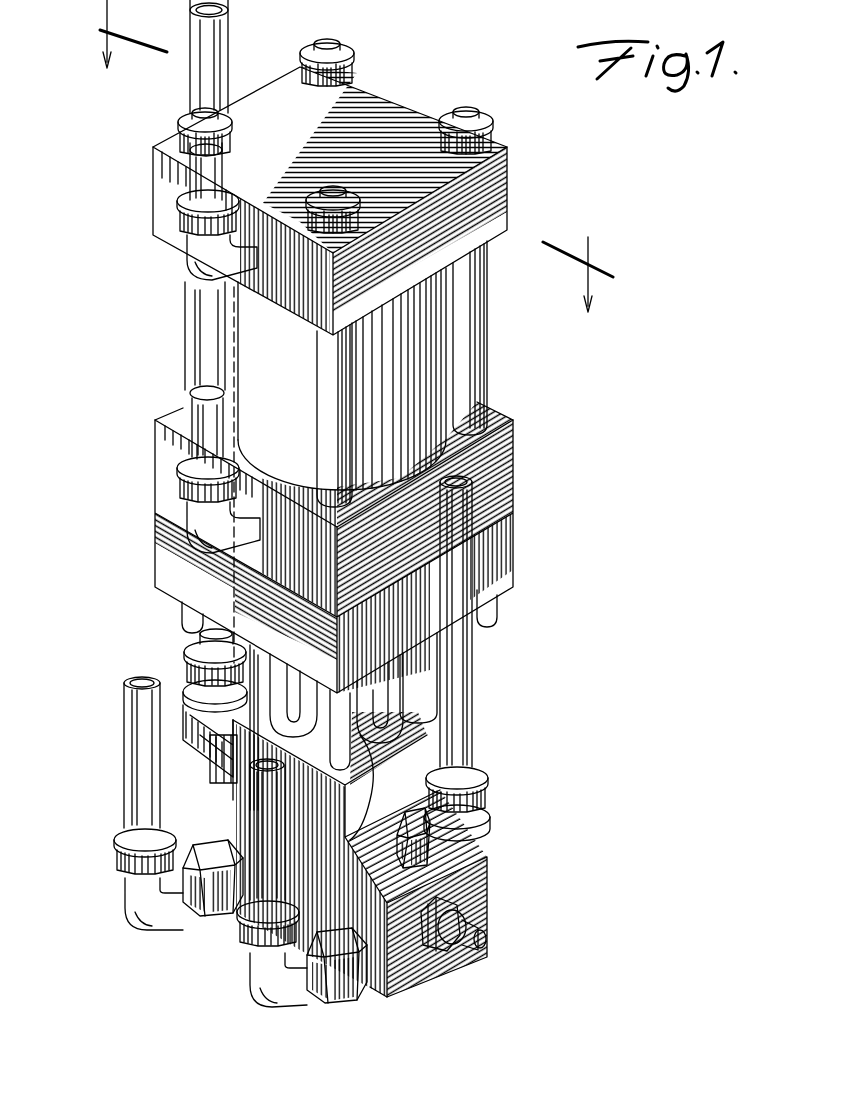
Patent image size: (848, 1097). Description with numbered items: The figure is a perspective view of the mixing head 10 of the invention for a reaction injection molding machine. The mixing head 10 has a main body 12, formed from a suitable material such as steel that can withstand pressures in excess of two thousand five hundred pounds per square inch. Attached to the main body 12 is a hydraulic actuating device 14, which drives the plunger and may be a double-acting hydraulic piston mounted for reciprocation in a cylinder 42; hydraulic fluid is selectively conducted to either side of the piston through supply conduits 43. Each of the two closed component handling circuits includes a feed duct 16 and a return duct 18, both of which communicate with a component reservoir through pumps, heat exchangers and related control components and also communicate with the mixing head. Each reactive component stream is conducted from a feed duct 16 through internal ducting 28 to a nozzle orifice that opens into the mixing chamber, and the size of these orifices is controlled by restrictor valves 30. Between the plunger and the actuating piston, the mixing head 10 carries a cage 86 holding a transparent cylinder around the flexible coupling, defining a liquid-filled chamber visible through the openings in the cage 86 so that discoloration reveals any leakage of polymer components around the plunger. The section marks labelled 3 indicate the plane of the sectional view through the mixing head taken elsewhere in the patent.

The mixing head 10 is at (561, 436).
The main body 12 is at (518, 827).
The hydraulic actuating device 14 is at (154, 346).
The feed duct 16 is at (125, 757).
The return duct 18 is at (457, 673).
The internal ducting 28 is at (210, 830).
The restrictor valve 30 is at (440, 989).
The cylinder 42 is at (507, 567).
The supply conduit 43 is at (198, 180).
The cage 86 is at (378, 839).
The section line 3- 3 is at (356, 168).